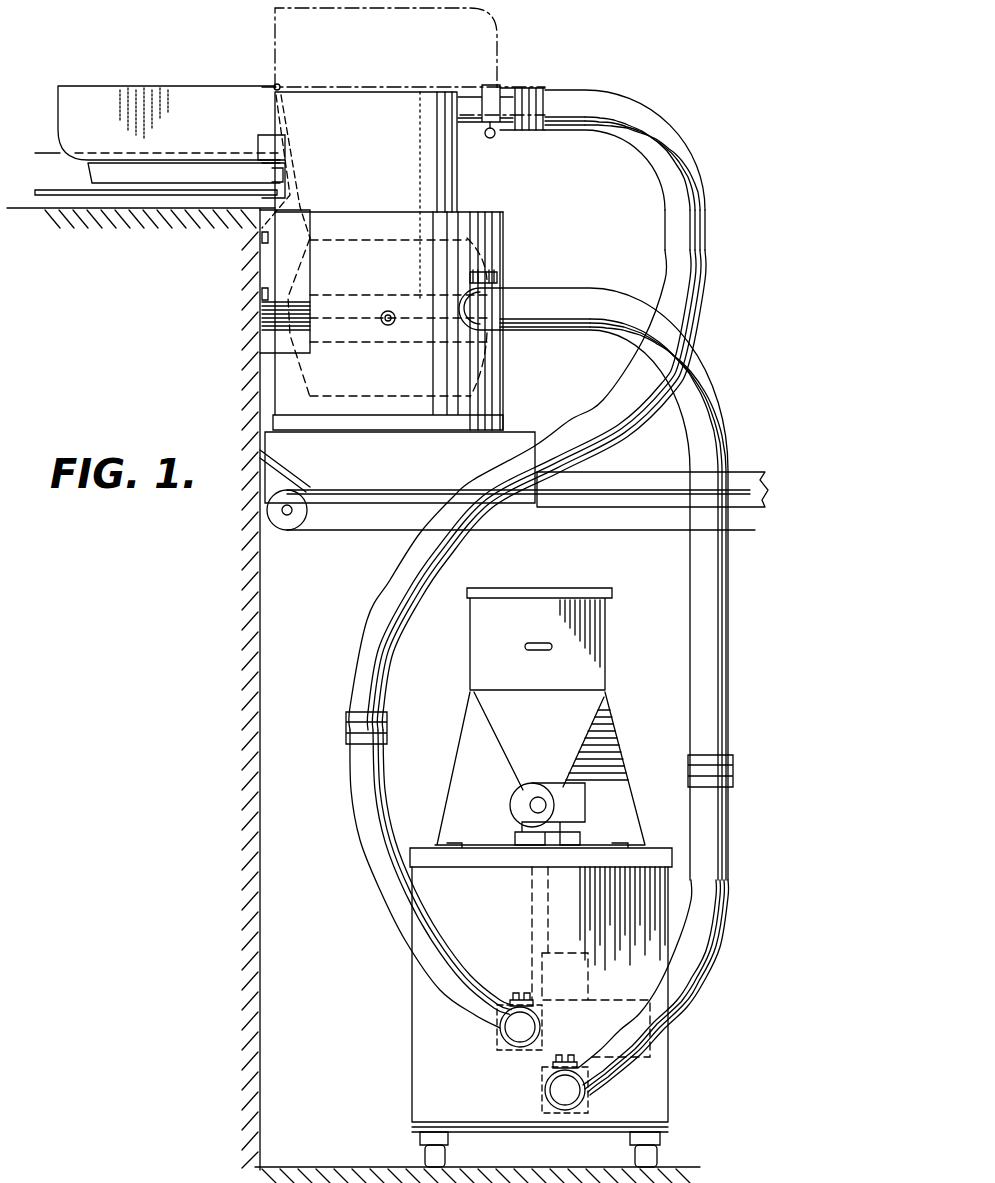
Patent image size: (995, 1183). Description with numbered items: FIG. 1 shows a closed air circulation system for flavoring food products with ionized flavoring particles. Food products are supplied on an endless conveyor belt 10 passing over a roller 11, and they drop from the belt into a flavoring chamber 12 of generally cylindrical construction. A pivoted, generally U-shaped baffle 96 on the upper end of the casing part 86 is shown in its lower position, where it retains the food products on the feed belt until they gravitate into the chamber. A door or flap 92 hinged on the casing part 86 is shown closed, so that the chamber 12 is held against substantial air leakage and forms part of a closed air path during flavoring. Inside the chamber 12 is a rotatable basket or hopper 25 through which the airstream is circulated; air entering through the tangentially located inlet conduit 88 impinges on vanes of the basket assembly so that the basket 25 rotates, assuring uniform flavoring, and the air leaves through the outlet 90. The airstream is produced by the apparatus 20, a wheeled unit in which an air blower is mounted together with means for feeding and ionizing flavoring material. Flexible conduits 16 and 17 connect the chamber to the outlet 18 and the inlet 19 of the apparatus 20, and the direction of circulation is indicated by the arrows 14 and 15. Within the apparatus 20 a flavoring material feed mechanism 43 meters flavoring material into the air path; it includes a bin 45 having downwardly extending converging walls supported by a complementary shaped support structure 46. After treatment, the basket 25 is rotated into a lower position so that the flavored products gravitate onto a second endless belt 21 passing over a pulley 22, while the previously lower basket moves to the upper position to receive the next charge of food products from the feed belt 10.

The conveyor belt 10 is at (38, 150).
The roller 11 is at (240, 233).
The flavoring chamber 12 is at (485, 206).
The arrow 14 is at (513, 305).
The arrow 15 is at (660, 160).
The flexible conduit 16 is at (630, 337).
The flexible conduit 17 is at (692, 197).
The outlet 18 is at (543, 1092).
The inlet 19 is at (525, 1000).
The apparatus 20 is at (632, 757).
The second endless belt 21 is at (373, 535).
The pulley 22 is at (292, 523).
The rotatable basket 25 is at (470, 265).
The flavoring material feed mechanism 43 is at (570, 797).
The bin 45 is at (575, 720).
The support structure 46 is at (455, 767).
The casing part 86 is at (440, 168).
The inlet conduit 88 is at (500, 290).
The outlet 90 is at (467, 97).
The flap 92 is at (300, 137).
The baffle 96 is at (155, 86).